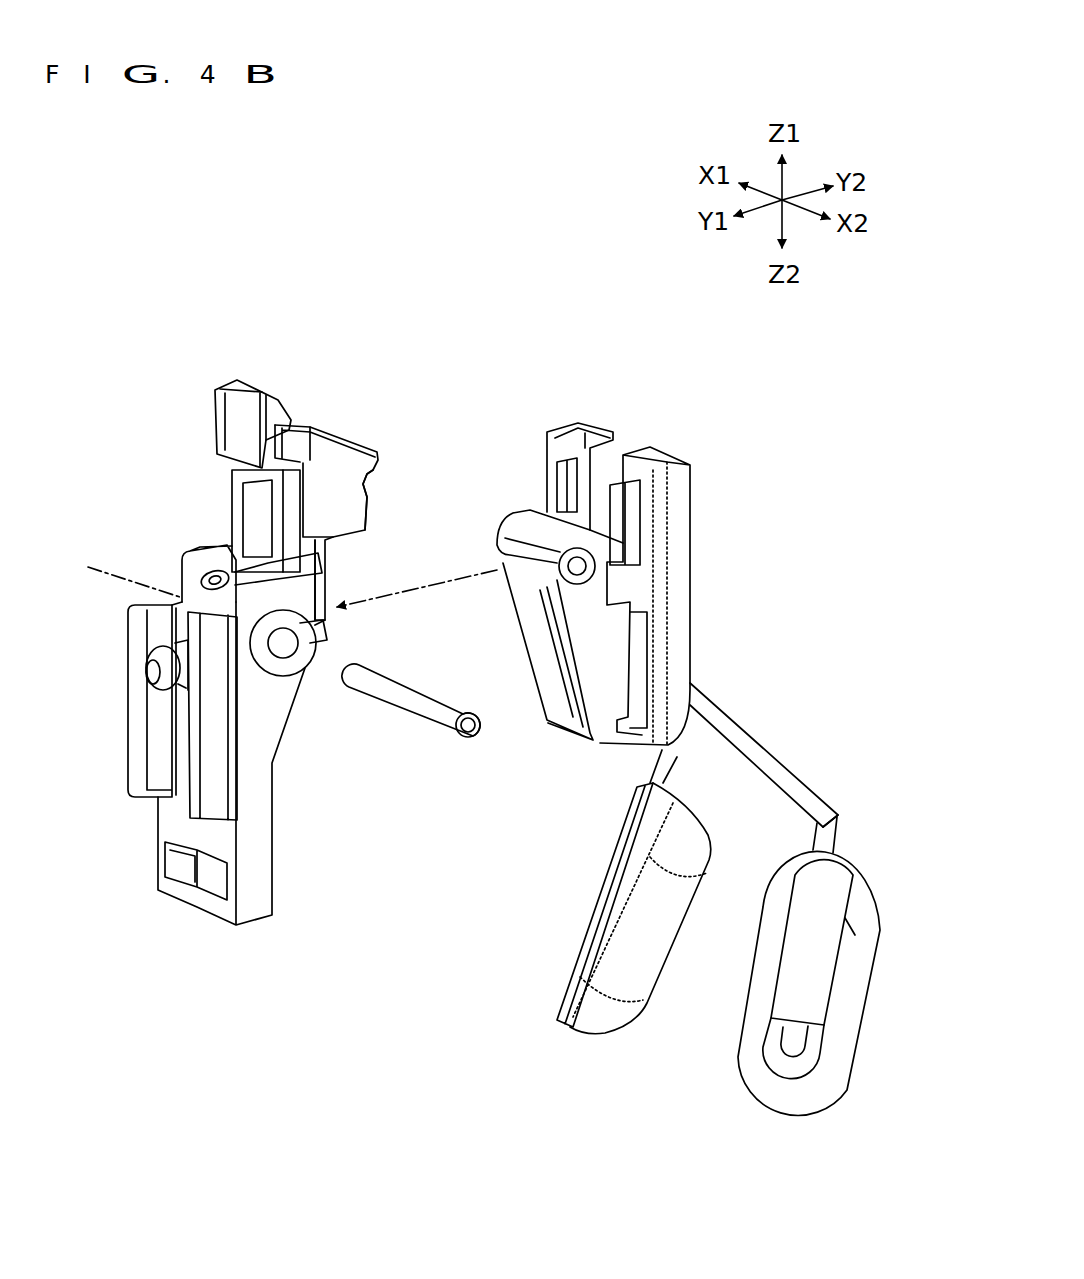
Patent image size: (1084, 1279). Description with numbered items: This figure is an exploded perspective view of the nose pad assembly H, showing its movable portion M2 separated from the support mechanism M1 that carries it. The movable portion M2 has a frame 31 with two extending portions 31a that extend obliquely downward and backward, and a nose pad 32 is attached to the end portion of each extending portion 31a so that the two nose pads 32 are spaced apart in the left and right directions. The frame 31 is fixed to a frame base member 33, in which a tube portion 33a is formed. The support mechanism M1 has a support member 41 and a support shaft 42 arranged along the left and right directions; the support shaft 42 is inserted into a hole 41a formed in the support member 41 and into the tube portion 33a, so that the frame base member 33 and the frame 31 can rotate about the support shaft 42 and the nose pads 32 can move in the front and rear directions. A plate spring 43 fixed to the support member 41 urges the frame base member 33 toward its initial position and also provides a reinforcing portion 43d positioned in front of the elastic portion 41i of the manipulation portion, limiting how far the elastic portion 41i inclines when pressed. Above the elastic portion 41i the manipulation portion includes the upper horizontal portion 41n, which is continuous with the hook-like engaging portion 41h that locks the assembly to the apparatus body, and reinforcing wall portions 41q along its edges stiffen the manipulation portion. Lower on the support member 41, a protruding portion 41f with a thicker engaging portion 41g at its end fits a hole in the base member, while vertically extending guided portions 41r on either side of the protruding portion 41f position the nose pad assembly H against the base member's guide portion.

The frame 31 is at (767, 744).
The extending portion 31a is at (795, 775).
The nose pad 32 is at (712, 840).
The frame base member 33 is at (709, 547).
The tube portion 33a is at (585, 566).
The support member 41 is at (173, 563).
The hole 41a is at (287, 653).
The protruding portion 41f is at (178, 640).
The engaging portion 41g is at (183, 670).
The engaging portion 41h is at (273, 410).
The elastic portion 41i is at (327, 554).
The upper horizontal portion 41n is at (340, 443).
The reinforcing wall portion 41q is at (360, 492).
The guided portion 41r is at (130, 740).
The support shaft 42 is at (430, 725).
The plate spring 43 is at (232, 510).
The reinforcing portion 43d is at (255, 530).
The nose pad assembly H is at (545, 293).
The support mechanism M1 is at (272, 378).
The movable portion M2 is at (565, 416).